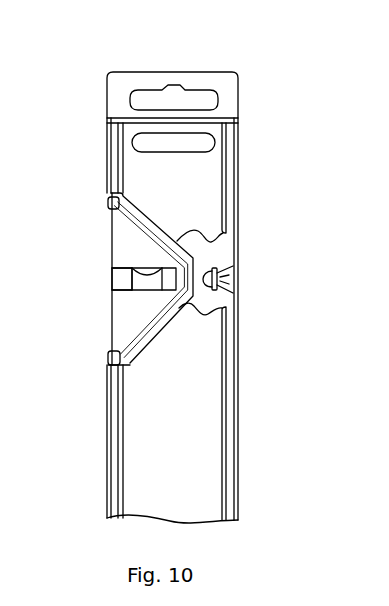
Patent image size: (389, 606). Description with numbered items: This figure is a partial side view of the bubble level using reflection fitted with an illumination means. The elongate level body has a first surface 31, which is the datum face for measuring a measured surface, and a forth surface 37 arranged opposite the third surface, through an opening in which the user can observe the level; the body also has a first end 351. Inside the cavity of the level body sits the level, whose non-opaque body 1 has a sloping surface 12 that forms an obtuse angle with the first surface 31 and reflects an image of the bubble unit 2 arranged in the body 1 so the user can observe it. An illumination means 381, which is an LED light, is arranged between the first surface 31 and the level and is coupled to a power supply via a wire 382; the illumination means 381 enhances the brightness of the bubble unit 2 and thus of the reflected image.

The first end 351 is at (217, 88).
The forth surface 37 is at (192, 193).
The first surface 31 is at (238, 220).
The illumination means 381 is at (218, 271).
The wire 382 is at (221, 284).
The sloping surface 12 is at (137, 221).
The body 1 is at (131, 251).
The bubble unit 2 is at (122, 283).